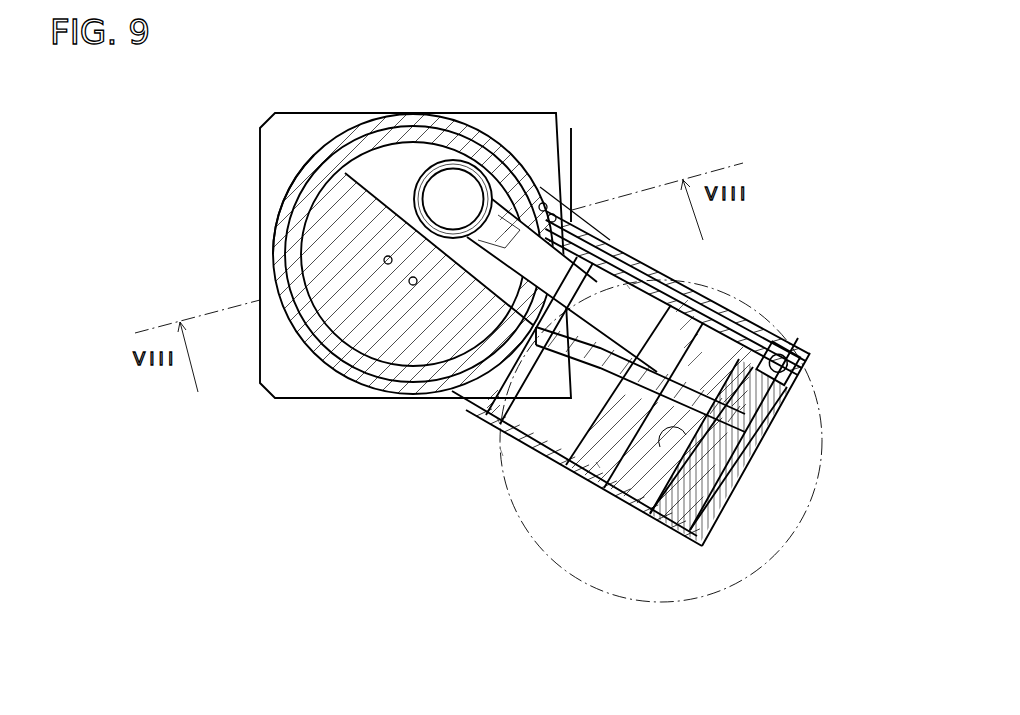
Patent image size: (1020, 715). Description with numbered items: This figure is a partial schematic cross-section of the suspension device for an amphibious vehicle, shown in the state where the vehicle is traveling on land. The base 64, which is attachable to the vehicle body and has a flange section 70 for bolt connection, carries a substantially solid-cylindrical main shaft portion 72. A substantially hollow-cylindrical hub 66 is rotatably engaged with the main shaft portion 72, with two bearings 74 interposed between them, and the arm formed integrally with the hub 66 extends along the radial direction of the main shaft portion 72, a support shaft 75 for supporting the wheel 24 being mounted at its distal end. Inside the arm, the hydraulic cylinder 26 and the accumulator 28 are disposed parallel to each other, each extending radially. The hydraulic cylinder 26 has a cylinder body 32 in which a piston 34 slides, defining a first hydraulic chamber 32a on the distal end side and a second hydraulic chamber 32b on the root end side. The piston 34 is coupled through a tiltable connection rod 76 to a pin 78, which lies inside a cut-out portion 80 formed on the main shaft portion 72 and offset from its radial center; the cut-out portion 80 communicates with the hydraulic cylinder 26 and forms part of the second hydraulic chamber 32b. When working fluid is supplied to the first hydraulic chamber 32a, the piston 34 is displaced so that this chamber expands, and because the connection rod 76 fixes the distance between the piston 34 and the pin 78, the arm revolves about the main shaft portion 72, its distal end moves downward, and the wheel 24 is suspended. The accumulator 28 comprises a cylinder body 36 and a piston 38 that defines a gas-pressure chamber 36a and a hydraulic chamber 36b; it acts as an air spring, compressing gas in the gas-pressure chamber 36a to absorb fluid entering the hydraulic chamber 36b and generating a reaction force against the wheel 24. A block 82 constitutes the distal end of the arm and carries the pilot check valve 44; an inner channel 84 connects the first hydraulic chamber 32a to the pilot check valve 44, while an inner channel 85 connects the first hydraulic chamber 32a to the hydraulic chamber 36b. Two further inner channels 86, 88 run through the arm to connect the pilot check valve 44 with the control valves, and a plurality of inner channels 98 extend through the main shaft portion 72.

The wheel 24 is at (562, 572).
The hydraulic cylinder 26 is at (682, 280).
The accumulator 28 is at (505, 413).
The cylinder body 32 is at (700, 292).
The first hydraulic chamber 32a is at (687, 313).
The second hydraulic chamber 32b is at (560, 245).
The piston 34 is at (660, 295).
The cylinder body 36 is at (485, 404).
The gas-pressure chamber 36a is at (497, 420).
The hydraulic chamber 36b is at (597, 463).
The piston 38 is at (532, 460).
The pilot check valve 44 is at (800, 340).
The base 64 is at (560, 113).
The hub 66 is at (348, 152).
The flange section 70 is at (520, 110).
The main shaft portion 72 is at (325, 207).
The bearings 74 is at (305, 145).
The support shaft 75 is at (682, 515).
The connection rod 76 is at (545, 176).
The pin 78 is at (453, 190).
The cut-out portion 80 is at (402, 163).
The block 82 is at (732, 482).
The inner channel 84 is at (772, 392).
The inner channel 85 is at (737, 437).
The inner channel 86 is at (627, 286).
The inner channel 88 is at (556, 214).
The inner channels 98 is at (411, 285).